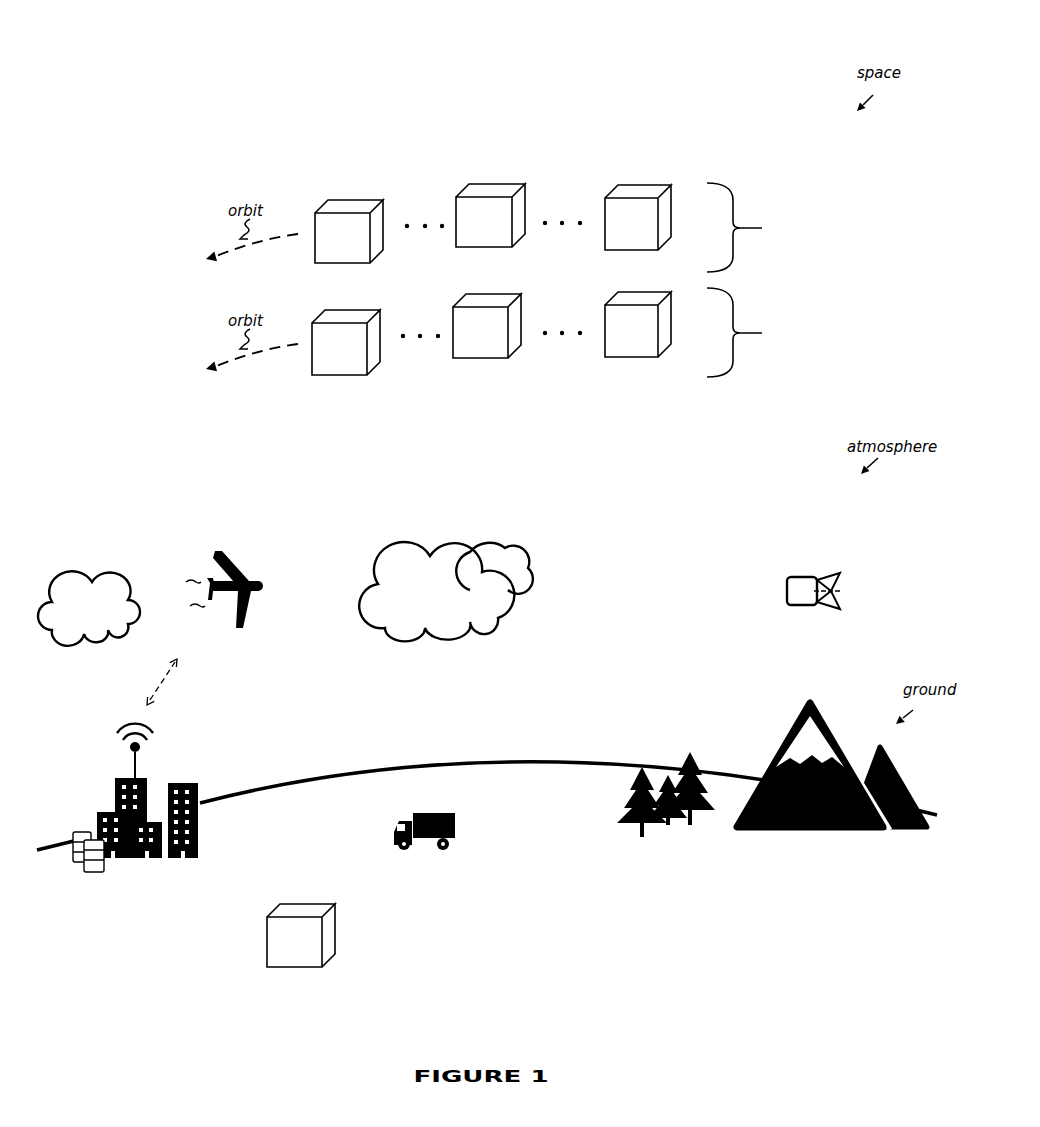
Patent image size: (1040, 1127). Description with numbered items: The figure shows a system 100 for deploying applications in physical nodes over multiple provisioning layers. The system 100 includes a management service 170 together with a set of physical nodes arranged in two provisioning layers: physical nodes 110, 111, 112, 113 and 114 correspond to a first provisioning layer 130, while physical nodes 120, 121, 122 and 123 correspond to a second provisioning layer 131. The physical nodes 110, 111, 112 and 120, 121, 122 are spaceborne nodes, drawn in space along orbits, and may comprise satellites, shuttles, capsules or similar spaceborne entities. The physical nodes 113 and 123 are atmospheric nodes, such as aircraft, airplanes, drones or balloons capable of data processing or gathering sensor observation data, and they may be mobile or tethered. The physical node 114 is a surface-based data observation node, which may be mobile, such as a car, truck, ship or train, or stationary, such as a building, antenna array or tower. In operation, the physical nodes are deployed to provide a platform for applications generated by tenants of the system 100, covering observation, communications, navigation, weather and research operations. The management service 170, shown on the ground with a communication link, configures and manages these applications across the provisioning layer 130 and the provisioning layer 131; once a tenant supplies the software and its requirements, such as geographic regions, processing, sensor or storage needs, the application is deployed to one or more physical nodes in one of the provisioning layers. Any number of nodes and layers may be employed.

The system 100 is at (125, 52).
The physical node 110 is at (358, 248).
The physical node 111 is at (500, 232).
The physical node 112 is at (647, 233).
The physical node 113 is at (895, 667).
The physical node 114 is at (310, 988).
The physical node 120 is at (356, 358).
The physical node 121 is at (496, 342).
The physical node 122 is at (647, 340).
The physical node 123 is at (346, 648).
The provisioning layer 130 is at (890, 251).
The provisioning layer 131 is at (890, 356).
The management service 170 is at (88, 872).